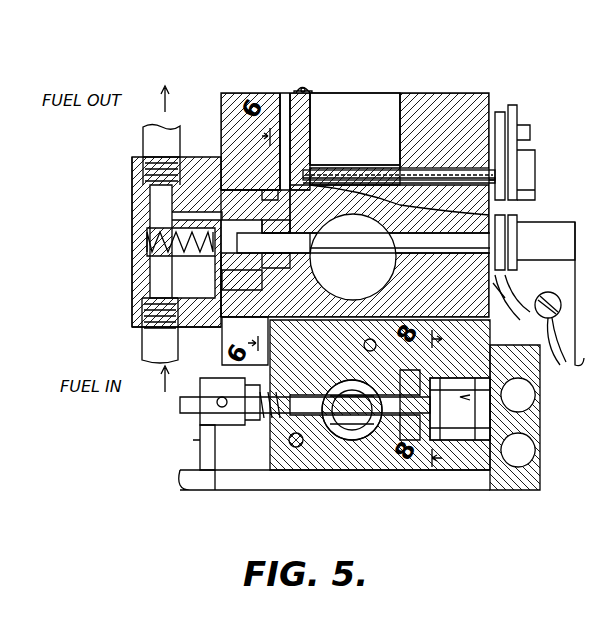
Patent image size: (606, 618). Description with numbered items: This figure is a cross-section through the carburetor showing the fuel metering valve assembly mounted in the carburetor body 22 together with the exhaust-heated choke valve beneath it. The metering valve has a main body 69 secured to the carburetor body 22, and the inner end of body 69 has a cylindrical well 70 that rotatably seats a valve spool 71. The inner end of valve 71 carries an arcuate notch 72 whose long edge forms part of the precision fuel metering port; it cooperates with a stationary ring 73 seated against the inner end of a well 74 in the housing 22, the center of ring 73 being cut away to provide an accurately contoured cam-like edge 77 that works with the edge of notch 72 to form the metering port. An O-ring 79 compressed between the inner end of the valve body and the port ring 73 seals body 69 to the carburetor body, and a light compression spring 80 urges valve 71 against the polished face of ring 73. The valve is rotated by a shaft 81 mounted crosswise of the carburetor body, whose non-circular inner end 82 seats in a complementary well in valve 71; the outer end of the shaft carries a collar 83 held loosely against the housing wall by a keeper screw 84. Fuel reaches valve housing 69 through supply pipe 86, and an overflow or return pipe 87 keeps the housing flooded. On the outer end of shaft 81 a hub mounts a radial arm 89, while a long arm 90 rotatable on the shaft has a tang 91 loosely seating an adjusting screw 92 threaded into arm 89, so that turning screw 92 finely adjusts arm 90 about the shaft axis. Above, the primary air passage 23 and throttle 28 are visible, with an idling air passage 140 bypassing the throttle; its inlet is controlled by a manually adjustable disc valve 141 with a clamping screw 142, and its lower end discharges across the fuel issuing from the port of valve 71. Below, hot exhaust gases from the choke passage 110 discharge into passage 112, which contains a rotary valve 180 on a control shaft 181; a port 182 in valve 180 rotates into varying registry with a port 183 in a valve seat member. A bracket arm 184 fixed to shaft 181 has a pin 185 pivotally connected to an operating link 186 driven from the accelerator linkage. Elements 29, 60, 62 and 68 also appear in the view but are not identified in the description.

The carburetor body 22 is at (440, 91).
The primary air passage 23 is at (400, 108).
The throttle 28 is at (322, 169).
The sleeve 29 is at (360, 168).
The end plate 60 is at (500, 112).
The fastener 62 is at (515, 113).
The valve body 68 is at (124, 243).
The main body 69 is at (133, 292).
The cylindrical well 70 is at (240, 285).
The valve spool 71 is at (207, 285).
The arcuate notch 72 is at (262, 325).
The stationary ring 73 is at (282, 264).
The well 74 is at (211, 229).
The cam-like edge 77 is at (283, 221).
The O-ring 79 is at (263, 186).
The compression spring 80 is at (158, 249).
The shaft 81 is at (376, 248).
The non-circular inner end 82 is at (270, 243).
The collar 83 is at (490, 252).
The keeper screw 84 is at (535, 275).
The supply pipe 86 is at (150, 340).
The return fuel pipe 87 is at (150, 136).
The radial arm 89 is at (507, 299).
The long arm 90 is at (598, 360).
The tang 91 is at (562, 351).
The adjusting screw 92 is at (536, 323).
The flow passage 110 is at (545, 445).
The outlet conduit 112 is at (345, 425).
The idling air passage 140 is at (290, 115).
The disc valve 141 is at (318, 90).
The clamping screw 142 is at (305, 89).
The rotary valve 180 is at (440, 430).
The control shaft 181 is at (290, 395).
The port 182 is at (395, 373).
The port 183 is at (389, 440).
The bracket arm 184 is at (200, 416).
The pin 185 is at (182, 470).
The operating link 186 is at (193, 440).